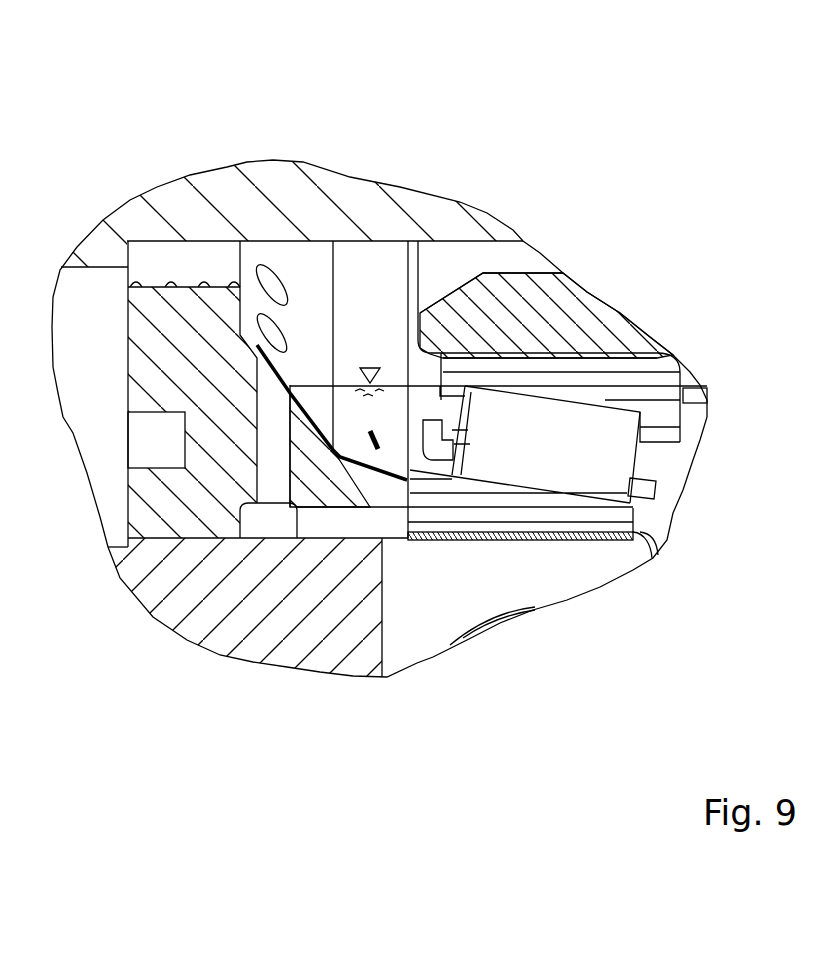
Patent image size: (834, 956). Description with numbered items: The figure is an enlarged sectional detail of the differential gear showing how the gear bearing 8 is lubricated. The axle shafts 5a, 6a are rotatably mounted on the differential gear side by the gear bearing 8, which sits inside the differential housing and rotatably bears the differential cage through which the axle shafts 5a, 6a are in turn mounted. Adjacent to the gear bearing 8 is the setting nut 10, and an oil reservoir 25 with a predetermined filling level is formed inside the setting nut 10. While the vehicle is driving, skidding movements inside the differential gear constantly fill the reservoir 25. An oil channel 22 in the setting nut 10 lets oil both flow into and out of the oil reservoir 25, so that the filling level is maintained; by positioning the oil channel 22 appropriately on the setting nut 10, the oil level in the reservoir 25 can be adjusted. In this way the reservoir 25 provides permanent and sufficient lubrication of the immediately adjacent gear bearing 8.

The oil channel 22 is at (270, 283).
The axle shaft 5a is at (372, 217).
The axle shaft 6a is at (535, 191).
The gear bearing 8 is at (533, 426).
The setting nut 10 is at (327, 484).
The oil reservoir 25 is at (377, 440).